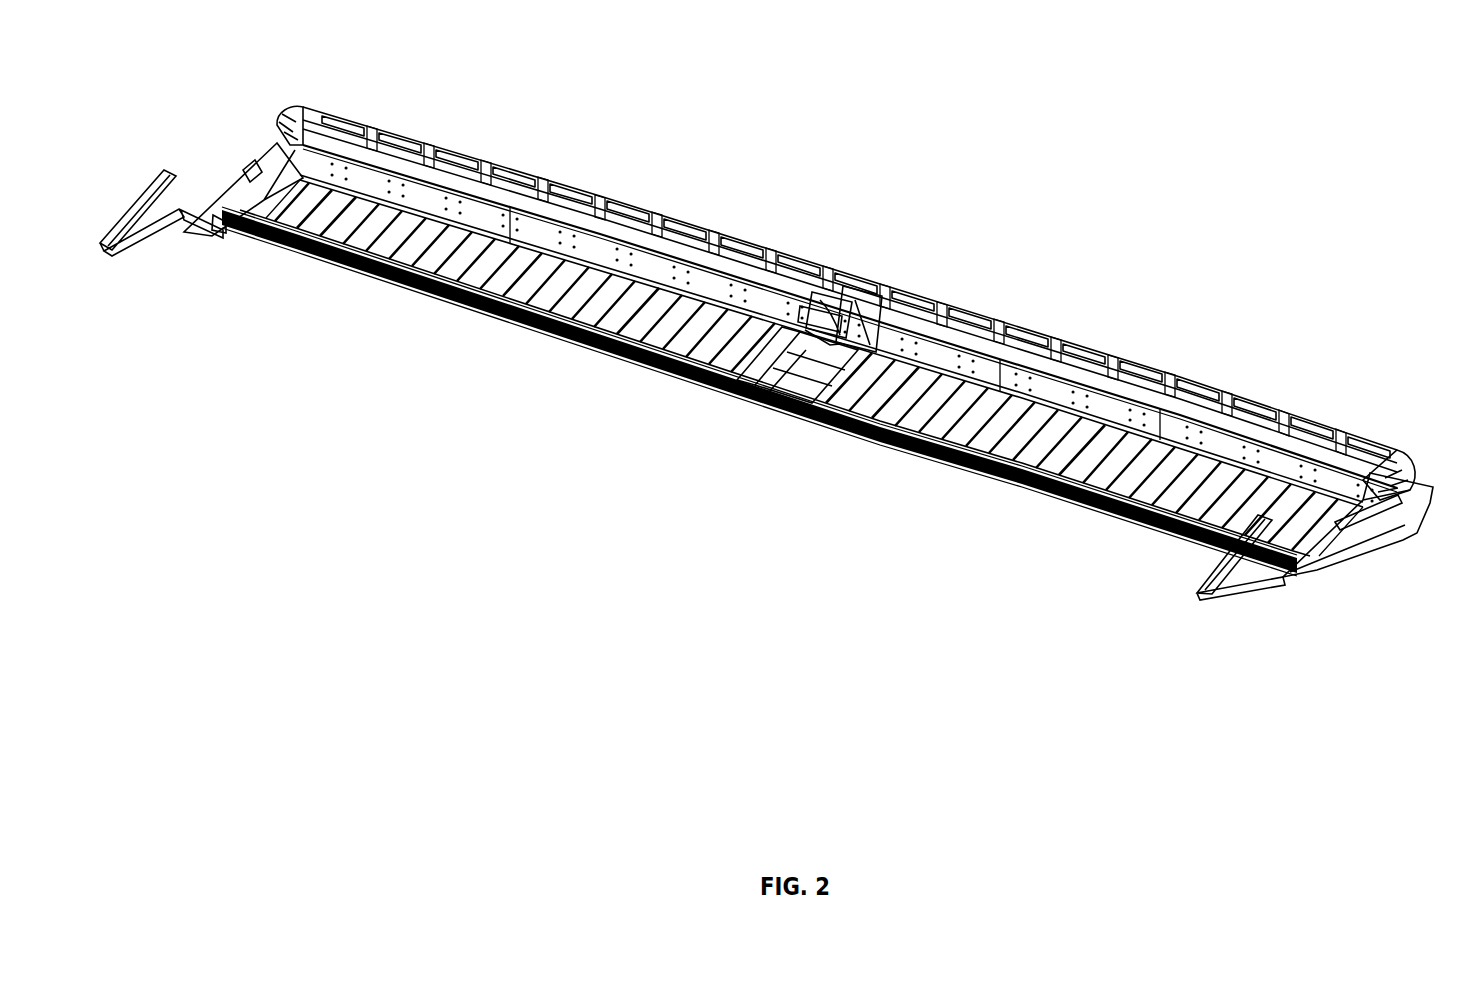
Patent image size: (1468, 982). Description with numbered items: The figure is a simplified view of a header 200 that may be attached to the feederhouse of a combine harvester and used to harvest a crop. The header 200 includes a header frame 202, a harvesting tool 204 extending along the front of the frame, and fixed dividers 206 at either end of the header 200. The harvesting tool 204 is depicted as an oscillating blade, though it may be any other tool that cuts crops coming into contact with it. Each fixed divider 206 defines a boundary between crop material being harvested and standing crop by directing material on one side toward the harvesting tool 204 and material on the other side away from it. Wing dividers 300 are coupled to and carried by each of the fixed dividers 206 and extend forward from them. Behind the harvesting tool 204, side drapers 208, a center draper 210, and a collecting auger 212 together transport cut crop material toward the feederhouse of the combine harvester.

The header 200 is at (954, 92).
The header frame 202 is at (583, 195).
The harvesting tool 204 is at (560, 343).
The fixed divider 206 is at (237, 167).
The side draper 208 is at (410, 265).
The center draper 210 is at (793, 378).
The collecting auger 212 is at (873, 325).
The wing divider 300 is at (130, 250).